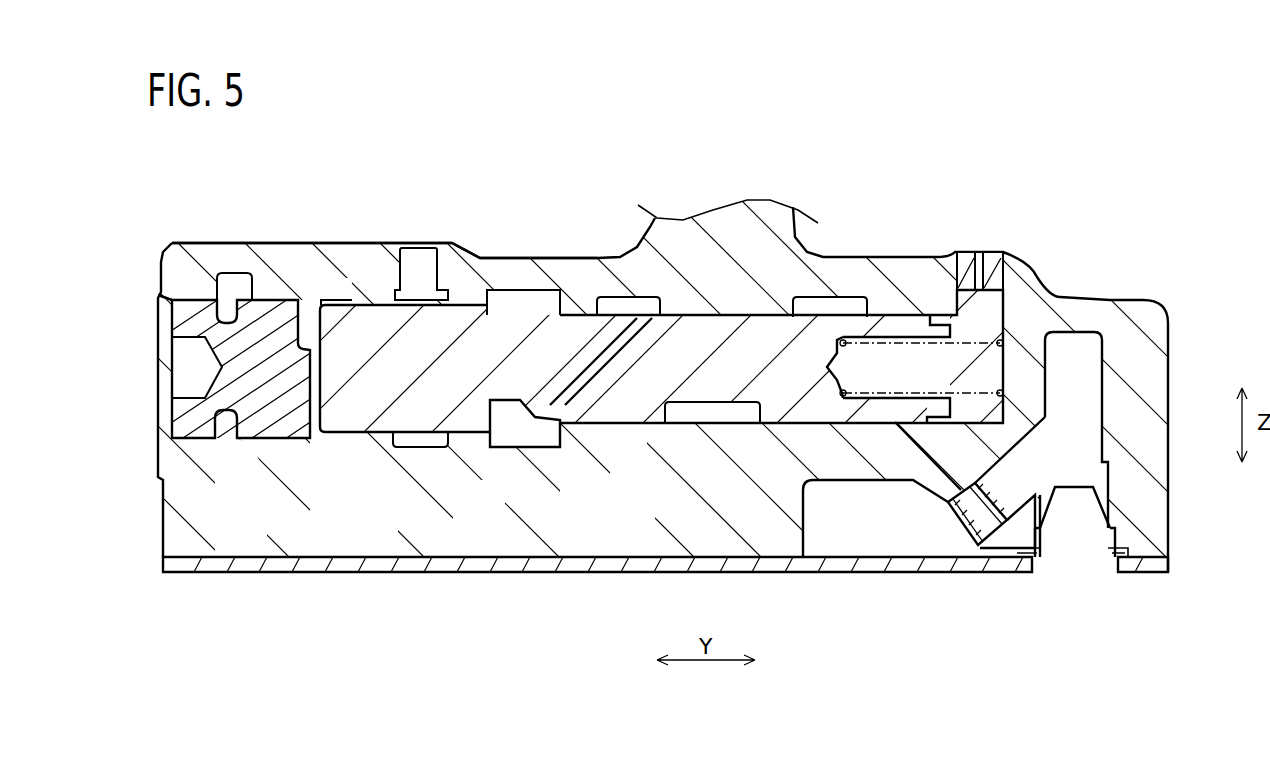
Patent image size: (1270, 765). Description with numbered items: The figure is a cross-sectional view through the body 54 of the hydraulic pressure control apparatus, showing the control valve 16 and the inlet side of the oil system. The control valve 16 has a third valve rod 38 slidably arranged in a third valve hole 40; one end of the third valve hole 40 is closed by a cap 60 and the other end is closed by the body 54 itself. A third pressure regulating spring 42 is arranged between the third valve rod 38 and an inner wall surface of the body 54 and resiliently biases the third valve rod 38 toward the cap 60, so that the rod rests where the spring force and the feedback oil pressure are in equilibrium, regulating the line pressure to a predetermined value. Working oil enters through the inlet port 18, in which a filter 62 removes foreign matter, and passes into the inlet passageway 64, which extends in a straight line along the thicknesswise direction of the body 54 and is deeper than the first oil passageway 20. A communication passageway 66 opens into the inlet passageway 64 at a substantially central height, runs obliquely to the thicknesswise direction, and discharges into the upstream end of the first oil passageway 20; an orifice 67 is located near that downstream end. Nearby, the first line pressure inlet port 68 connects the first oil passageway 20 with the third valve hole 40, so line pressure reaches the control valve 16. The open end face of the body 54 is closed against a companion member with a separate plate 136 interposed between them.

The control valve 16 is at (451, 141).
The inlet port 18 is at (1102, 543).
The first oil passageway 20 is at (873, 557).
The third valve rod 38 is at (572, 327).
The third valve hole 40 is at (693, 318).
The third pressure regulating spring 42 is at (897, 343).
The body 54 is at (354, 257).
The cap 60 is at (272, 325).
The filter 62 is at (1072, 487).
The inlet passageway 64 is at (1102, 378).
The communication passageway 66 is at (997, 465).
The orifice 67 is at (973, 515).
The first line pressure inlet port 68 is at (827, 458).
The separate plate 136 is at (612, 560).